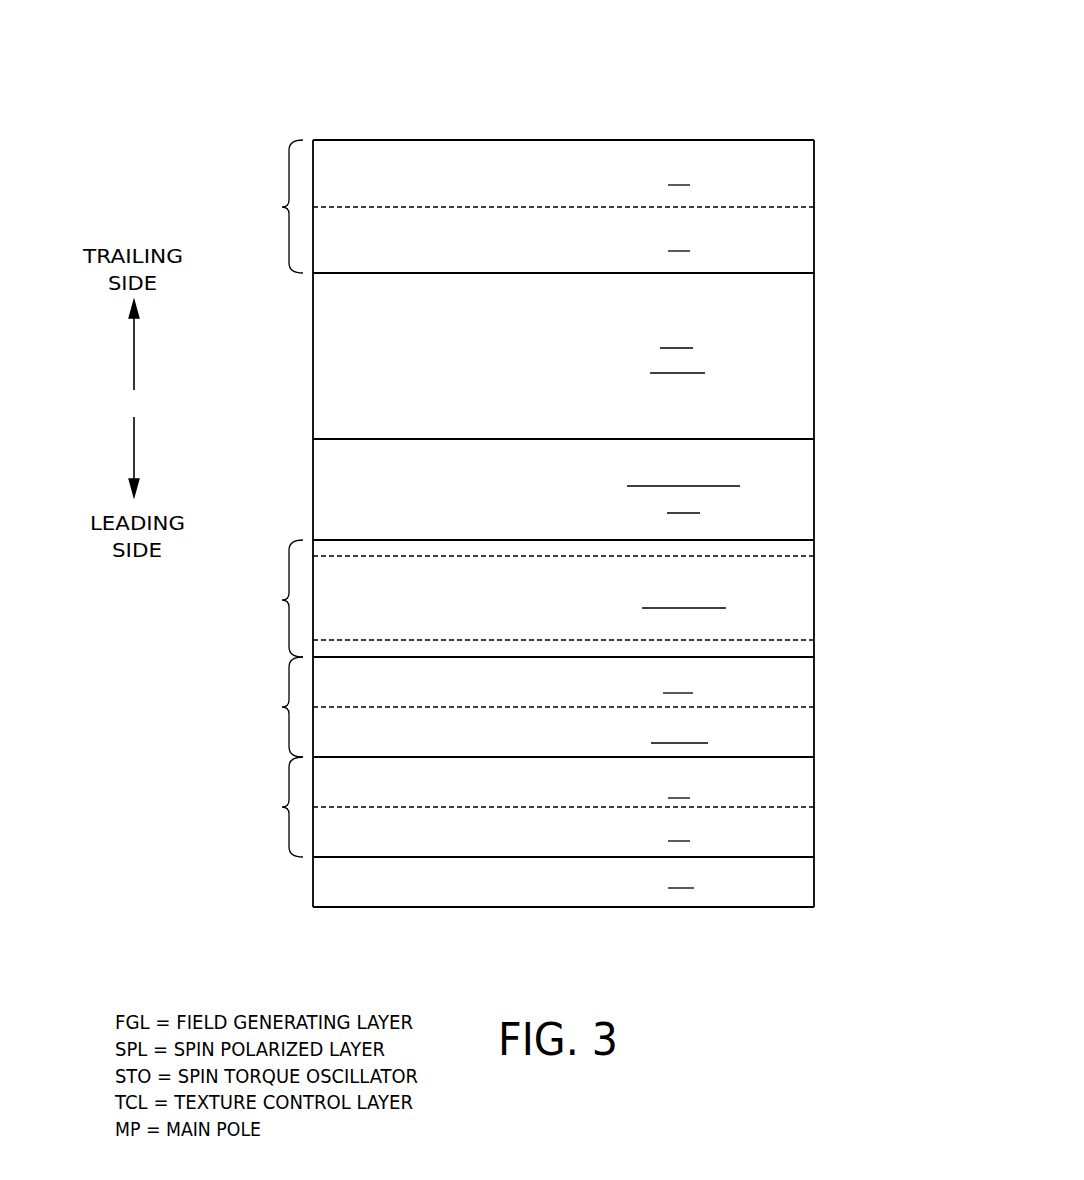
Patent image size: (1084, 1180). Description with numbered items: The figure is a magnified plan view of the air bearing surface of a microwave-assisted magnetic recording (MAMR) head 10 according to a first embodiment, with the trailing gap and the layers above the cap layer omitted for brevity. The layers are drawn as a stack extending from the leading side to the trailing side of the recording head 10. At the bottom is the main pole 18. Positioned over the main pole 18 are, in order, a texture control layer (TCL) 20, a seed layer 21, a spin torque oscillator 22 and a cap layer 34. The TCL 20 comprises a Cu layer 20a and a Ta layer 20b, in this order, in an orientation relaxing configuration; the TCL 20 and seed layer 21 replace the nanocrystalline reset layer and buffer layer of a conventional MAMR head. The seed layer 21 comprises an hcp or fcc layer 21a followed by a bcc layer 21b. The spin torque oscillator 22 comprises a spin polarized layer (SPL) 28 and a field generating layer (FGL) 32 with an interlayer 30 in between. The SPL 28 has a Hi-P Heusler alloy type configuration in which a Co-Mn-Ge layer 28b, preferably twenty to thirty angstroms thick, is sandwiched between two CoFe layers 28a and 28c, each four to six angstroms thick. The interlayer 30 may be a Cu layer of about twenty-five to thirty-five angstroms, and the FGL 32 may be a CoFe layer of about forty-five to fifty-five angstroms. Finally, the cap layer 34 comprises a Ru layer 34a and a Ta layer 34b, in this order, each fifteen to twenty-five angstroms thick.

The magnetic field-assisted magnetic recording (MAMR) head 10 is at (313, 61).
The main pole 18 is at (573, 888).
The texture control layer (TCL) 20 is at (283, 807).
The Cu layer 20a is at (577, 841).
The Ta layer 20b is at (577, 798).
The seed layer 21 is at (283, 707).
The hcp or fcc layer 21a is at (577, 743).
The bcc layer 21b is at (577, 693).
The spin torque oscillator 22 is at (836, 580).
The spin polarized layer (SPL) 28 is at (283, 600).
The CoFe layer 28a is at (803, 652).
The Co-Mn-Ge (CMG) layer 28b is at (577, 608).
The CoFe layer 28c is at (803, 549).
The interlayer 30 is at (573, 501).
The field generating layer (FGL) 32 is at (573, 363).
The cap layer 34 is at (283, 207).
The Ru layer 34a is at (577, 251).
The Ta layer 34b is at (577, 185).